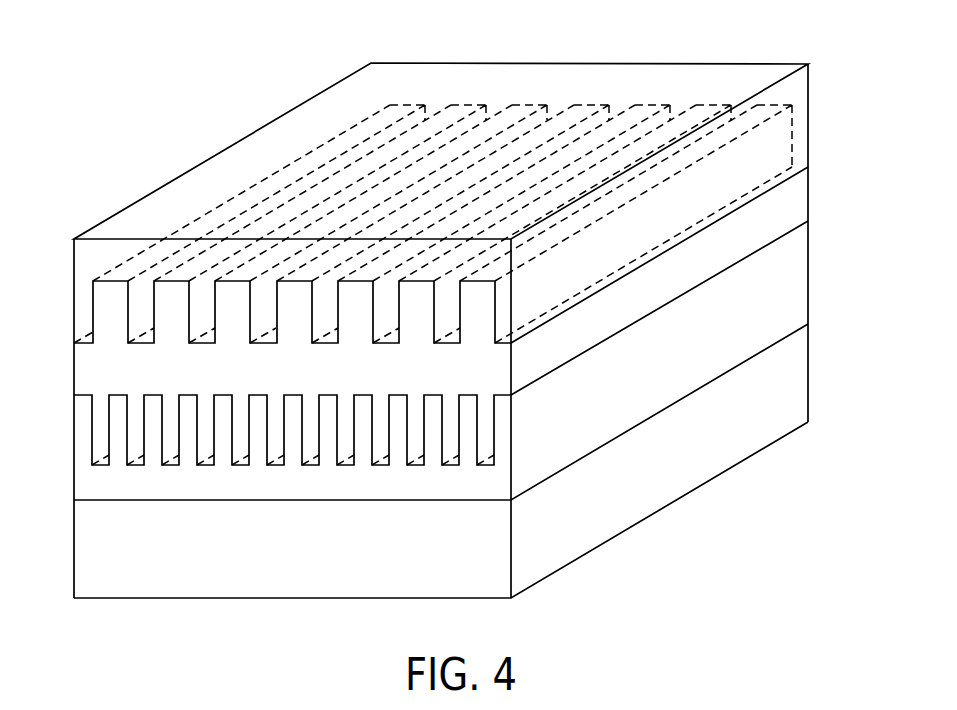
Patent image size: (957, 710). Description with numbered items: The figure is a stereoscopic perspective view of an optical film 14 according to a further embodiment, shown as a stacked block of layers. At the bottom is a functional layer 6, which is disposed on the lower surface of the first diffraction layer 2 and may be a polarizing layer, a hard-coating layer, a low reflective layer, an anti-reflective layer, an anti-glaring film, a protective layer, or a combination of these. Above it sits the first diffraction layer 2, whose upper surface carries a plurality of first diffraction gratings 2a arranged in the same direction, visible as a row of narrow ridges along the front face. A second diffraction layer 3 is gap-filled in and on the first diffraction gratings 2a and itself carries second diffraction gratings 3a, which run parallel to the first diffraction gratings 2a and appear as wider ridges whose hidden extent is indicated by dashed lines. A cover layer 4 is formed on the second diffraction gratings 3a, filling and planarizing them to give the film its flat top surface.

The optical film 14 is at (83, 43).
The cover layer 4 is at (100, 255).
The second diffraction layer 3 is at (100, 378).
The second diffraction gratings 3a is at (485, 308).
The first diffraction layer 2 is at (100, 483).
The first diffraction gratings 2a is at (503, 432).
The functional layer 6 is at (103, 578).